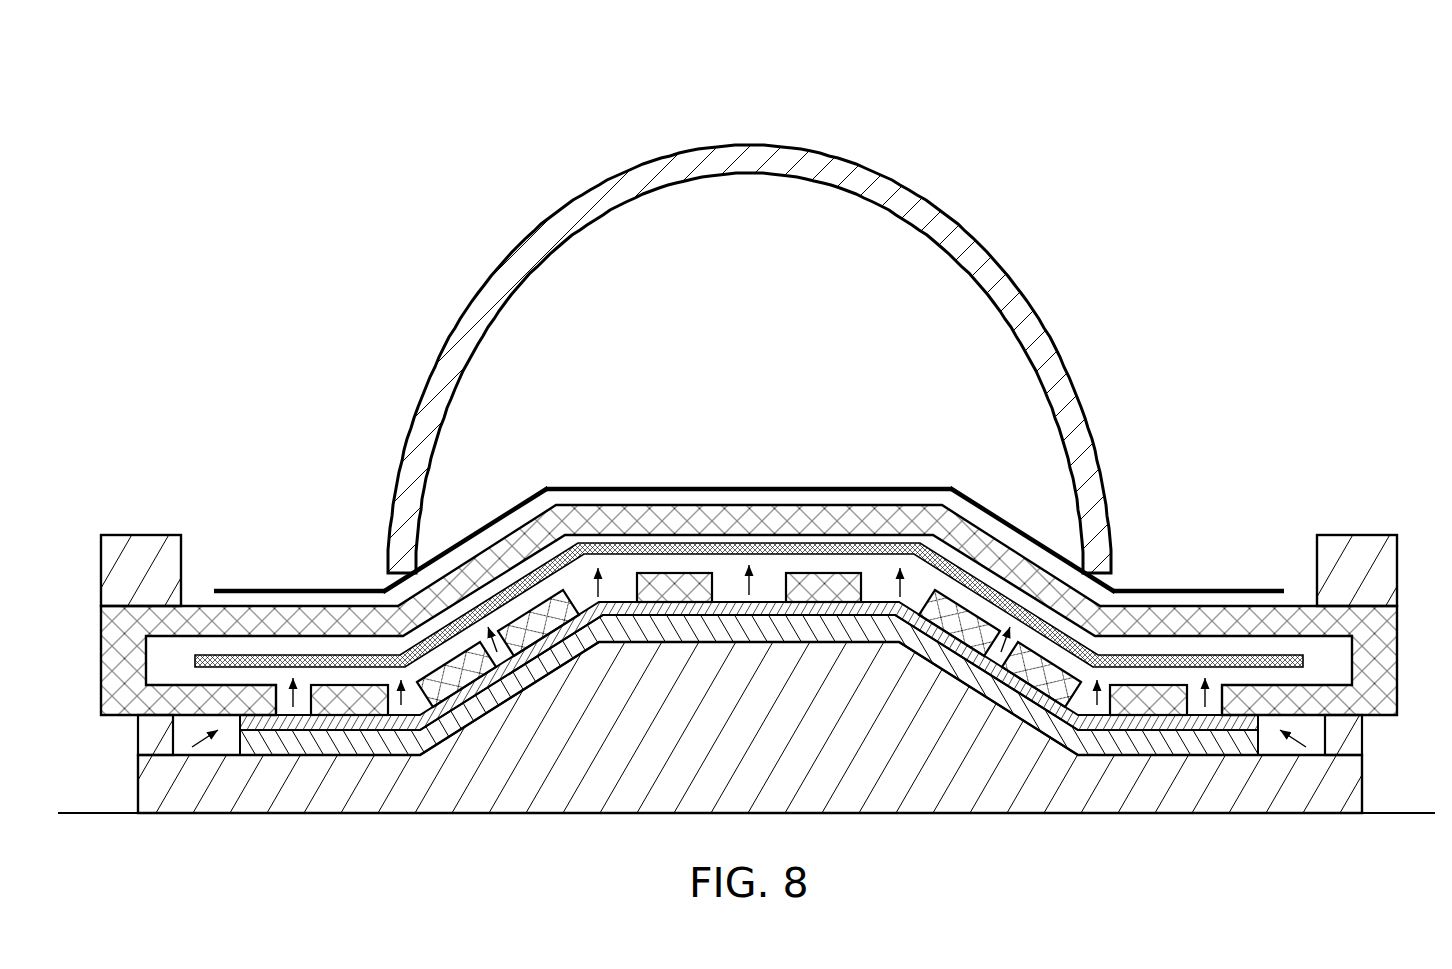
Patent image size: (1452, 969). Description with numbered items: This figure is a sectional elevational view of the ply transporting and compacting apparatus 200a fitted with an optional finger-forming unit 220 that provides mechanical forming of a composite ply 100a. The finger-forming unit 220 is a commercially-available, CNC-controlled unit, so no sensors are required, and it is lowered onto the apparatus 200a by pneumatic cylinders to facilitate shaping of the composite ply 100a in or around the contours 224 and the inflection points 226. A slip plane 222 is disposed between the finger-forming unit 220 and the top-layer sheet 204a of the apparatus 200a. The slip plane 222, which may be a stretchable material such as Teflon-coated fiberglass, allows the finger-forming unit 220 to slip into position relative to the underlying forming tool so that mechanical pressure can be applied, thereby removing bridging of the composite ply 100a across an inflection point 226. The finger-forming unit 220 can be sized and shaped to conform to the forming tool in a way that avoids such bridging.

The apparatus 200a is at (282, 139).
The optional finger-forming unit 220 is at (459, 344).
The slip plane 222 is at (328, 590).
The contours 224 is at (491, 524).
The inflection points 226 is at (545, 490).
The top-layer sheet 204a is at (744, 522).
The composite ply 100a is at (1155, 742).